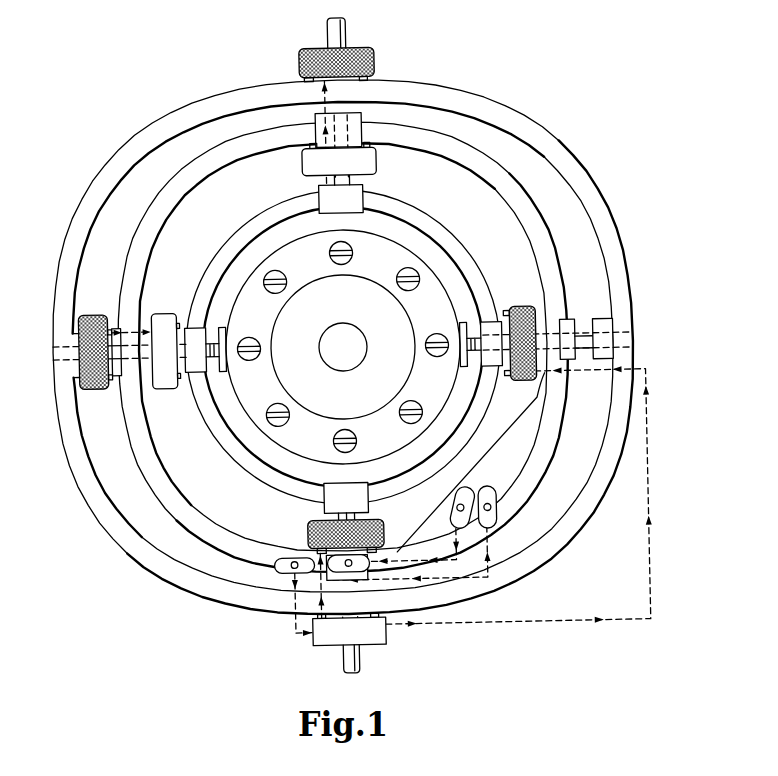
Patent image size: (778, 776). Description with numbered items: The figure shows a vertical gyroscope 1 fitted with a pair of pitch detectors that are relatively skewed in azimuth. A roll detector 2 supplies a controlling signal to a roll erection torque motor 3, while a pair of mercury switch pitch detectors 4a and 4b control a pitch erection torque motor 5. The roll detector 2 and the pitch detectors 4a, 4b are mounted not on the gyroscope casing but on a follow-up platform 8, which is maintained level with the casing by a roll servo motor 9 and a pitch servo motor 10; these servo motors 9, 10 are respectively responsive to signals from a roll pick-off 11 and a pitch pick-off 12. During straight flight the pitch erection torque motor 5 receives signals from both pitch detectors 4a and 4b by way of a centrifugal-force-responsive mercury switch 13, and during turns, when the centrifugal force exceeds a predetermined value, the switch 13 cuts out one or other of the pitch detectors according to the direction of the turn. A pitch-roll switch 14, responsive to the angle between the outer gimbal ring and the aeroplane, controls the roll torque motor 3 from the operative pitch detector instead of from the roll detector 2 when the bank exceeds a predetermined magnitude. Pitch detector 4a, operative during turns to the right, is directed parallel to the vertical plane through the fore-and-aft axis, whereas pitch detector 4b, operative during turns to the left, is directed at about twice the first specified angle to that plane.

The vertical gyroscope 1 is at (389, 338).
The roll detector 2 is at (283, 556).
The roll erection torque motor 3 is at (523, 311).
The mercury switch pitch detector 4a is at (494, 530).
The mercury switch pitch detector 4b is at (467, 491).
The pitch erection torque motor 5 is at (366, 561).
The follow-up platform 8 is at (193, 514).
The roll servo motor 9 is at (380, 59).
The pitch servo motor 10 is at (87, 388).
The roll pick-off 11 is at (381, 164).
The pitch pick-off 12 is at (163, 313).
The centrifugal-force-responsive mercury switch 13 is at (381, 523).
The pitch-roll switch 14 is at (366, 646).